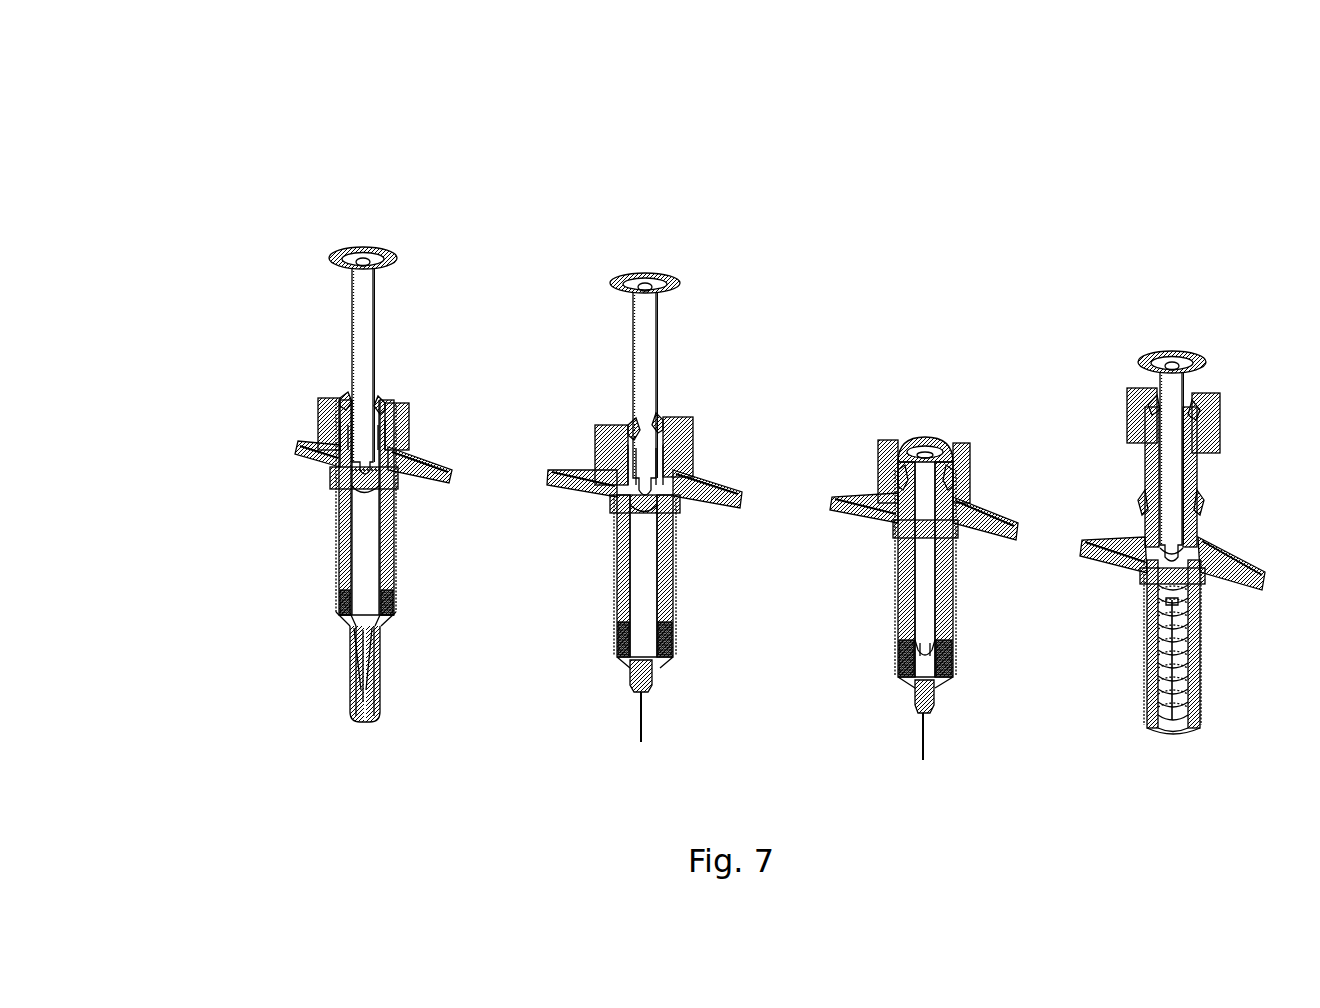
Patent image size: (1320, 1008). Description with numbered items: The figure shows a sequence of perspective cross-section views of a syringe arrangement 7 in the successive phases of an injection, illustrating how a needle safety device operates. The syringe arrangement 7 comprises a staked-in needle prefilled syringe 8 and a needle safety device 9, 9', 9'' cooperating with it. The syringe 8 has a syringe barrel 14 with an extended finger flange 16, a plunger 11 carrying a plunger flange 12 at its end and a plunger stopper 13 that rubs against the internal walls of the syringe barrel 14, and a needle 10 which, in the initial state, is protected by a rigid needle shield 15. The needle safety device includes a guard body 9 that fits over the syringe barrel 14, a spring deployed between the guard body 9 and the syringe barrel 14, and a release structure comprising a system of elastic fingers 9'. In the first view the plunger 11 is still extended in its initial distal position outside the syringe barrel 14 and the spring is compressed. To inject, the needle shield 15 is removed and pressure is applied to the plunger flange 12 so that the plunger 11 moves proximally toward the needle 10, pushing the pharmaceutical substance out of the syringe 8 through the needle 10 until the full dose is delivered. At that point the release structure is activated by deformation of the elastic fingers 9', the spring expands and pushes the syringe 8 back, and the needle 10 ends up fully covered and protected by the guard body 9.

The syringe arrangement 7 is at (258, 181).
The staked-in needle prefilled syringe 8 is at (366, 528).
The guard body 9 is at (806, 567).
The elastic fingers 9' is at (602, 401).
The needle safety device part 9'' is at (696, 652).
The needle 10 is at (640, 708).
The plunger 11 is at (365, 315).
The plunger flange 12 is at (368, 252).
The plunger stopper 13 is at (366, 482).
The syringe barrel 14 is at (350, 548).
The needle shield 15 is at (350, 705).
The extended finger flange 16 is at (720, 480).